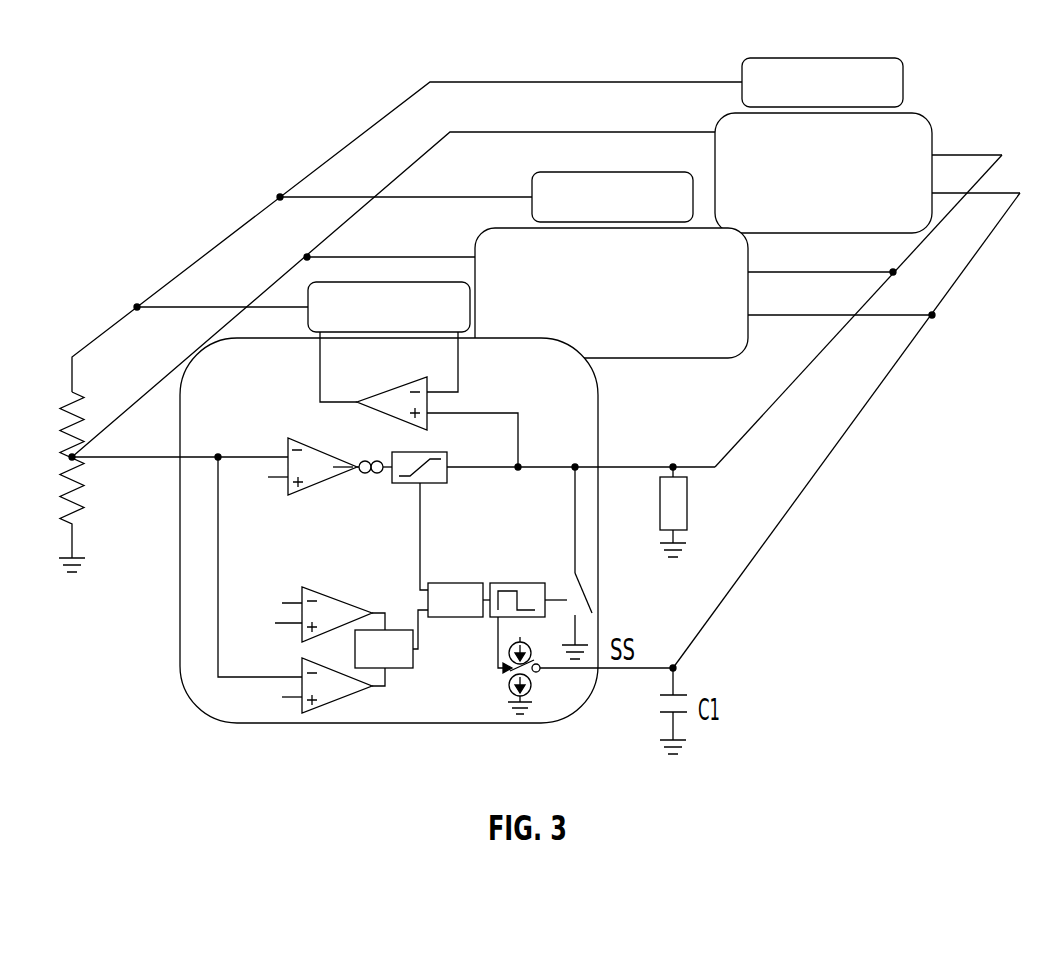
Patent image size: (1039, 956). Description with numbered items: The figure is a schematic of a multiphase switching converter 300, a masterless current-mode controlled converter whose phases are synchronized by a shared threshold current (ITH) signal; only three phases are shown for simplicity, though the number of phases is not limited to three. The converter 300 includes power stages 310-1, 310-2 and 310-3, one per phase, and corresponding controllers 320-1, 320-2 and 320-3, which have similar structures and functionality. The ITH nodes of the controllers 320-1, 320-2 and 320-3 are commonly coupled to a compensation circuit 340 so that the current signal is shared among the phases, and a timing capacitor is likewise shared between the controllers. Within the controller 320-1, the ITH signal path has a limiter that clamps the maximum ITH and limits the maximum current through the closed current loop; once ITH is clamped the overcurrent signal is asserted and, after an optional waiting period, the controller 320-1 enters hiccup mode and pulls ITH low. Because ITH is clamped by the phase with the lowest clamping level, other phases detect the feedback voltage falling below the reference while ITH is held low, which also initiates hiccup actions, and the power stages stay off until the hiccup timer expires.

The multiphase switching converter 300 is at (143, 100).
The power stage 310-1 is at (308, 283).
The power stage 310-2 is at (552, 172).
The power stage 310-3 is at (890, 54).
The controller 320-1 is at (270, 392).
The controller 320-2 is at (560, 268).
The controller 320-3 is at (797, 153).
The compensation circuit 340 is at (687, 500).